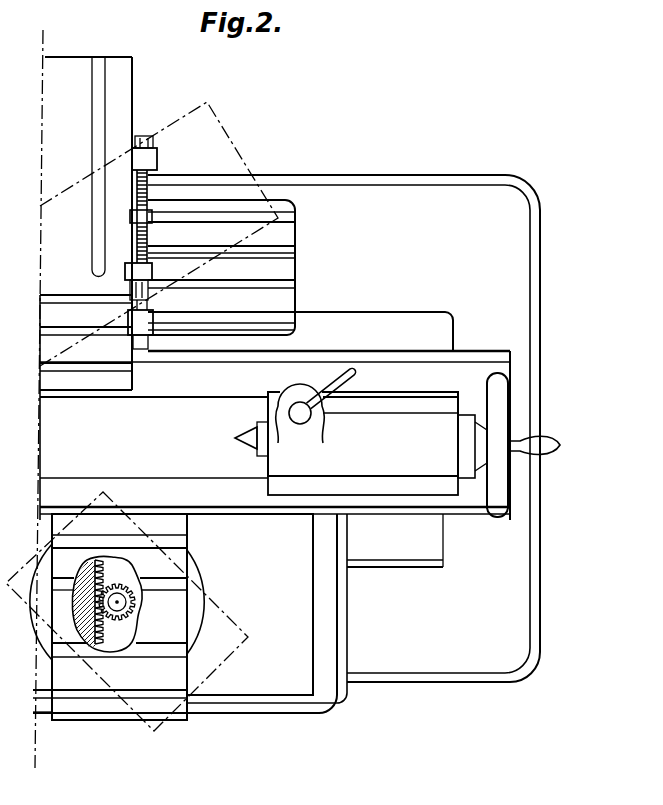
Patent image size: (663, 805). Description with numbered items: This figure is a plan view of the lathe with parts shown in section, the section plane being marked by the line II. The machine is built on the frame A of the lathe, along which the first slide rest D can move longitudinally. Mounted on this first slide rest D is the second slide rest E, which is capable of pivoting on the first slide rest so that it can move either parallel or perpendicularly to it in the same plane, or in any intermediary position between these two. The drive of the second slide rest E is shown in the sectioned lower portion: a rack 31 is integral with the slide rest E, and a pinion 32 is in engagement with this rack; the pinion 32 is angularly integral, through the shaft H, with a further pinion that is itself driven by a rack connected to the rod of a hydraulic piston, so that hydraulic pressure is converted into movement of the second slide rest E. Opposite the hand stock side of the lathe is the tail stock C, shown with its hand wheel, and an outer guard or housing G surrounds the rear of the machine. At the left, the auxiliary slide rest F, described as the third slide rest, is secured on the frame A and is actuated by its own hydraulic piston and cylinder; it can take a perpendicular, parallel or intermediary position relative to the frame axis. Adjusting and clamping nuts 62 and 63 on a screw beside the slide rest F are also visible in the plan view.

The section line II- II is at (49, 399).
The auxiliary slide rest F is at (88, 223).
The adjusting nut 63 is at (150, 205).
The frame of the lathe A is at (227, 262).
The clamping nut 62 is at (140, 287).
The frame guard G is at (286, 444).
The tail stock C is at (397, 442).
The second slide rest E is at (127, 611).
The shaft H is at (121, 604).
The first slide rest D is at (250, 604).
The rack 31 is at (93, 621).
The pinion 32 is at (115, 614).